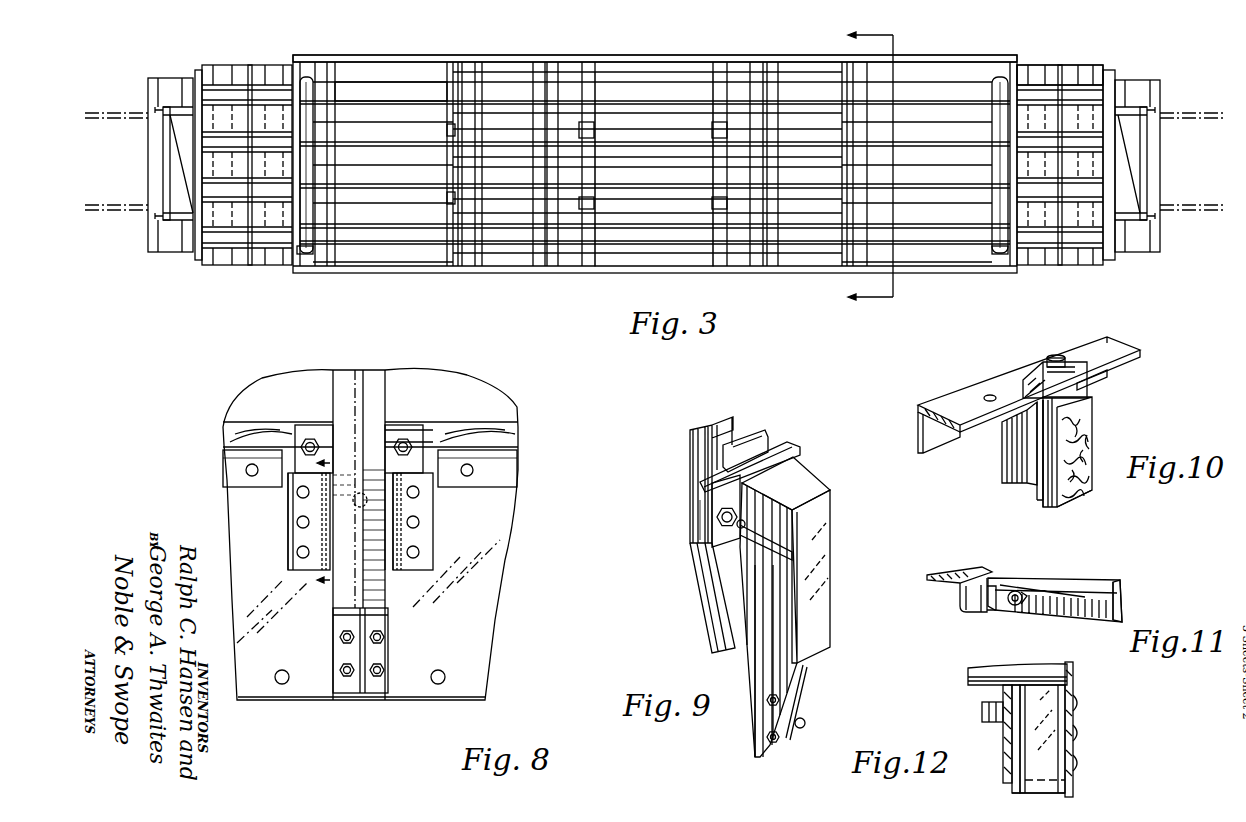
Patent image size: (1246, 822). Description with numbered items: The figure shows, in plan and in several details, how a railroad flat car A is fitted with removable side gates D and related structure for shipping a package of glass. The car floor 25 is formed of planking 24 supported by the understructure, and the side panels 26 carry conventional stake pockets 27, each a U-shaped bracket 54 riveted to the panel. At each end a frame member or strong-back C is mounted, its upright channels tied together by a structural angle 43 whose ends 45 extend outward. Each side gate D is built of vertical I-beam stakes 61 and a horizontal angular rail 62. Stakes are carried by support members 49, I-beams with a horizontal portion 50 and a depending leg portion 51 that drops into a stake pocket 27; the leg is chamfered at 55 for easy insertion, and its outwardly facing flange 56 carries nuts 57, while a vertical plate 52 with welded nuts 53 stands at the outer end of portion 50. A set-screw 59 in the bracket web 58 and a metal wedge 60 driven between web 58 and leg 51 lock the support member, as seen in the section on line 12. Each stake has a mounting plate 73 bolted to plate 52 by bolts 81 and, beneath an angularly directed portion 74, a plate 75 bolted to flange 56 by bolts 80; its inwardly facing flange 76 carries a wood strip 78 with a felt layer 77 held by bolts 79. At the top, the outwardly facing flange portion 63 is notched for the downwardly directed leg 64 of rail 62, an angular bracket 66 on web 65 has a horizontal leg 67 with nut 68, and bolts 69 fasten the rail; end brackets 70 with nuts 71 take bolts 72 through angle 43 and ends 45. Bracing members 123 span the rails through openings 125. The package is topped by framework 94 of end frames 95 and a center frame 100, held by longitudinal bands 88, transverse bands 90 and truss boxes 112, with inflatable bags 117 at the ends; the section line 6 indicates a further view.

In FIG. 3, the railroad flat car A is at (178, 82).
In FIG. 8, the railroad flat car A is at (243, 502).
In FIG. 3, the frame member C is at (248, 89).
In FIG. 3, the side gate D is at (394, 57).
In FIG. 3, the section line 6 is at (912, 43).
In FIG. 8, the section line 12 is at (353, 458).
In FIG. 8, the planking 24 is at (240, 439).
In FIG. 3, the floor 25 is at (1068, 78).
In FIG. 8, the floor 25 is at (505, 439).
In FIG. 8, the side panel 26 is at (492, 527).
In FIG. 12, the side panel 26 is at (1075, 748).
In FIG. 8, the stake pocket 27 is at (393, 505).
In FIG. 12, the stake pocket 27 is at (1003, 692).
In FIG. 3, the structural angle 43 is at (298, 245).
In FIG. 11, the structural angle 43 is at (950, 573).
In FIG. 11, the angle end 45 is at (970, 600).
In FIG. 9, the support member 49 is at (832, 537).
In FIG. 12, the support member 49 is at (990, 668).
In FIG. 9, the horizontal portion 50 is at (787, 488).
In FIG. 12, the horizontal portion 50 is at (978, 680).
In FIG. 9, the leg portion 51 is at (817, 612).
In FIG. 12, the leg portion 51 is at (1040, 702).
In FIG. 9, the vertical plate 52 is at (725, 495).
In FIG. 9, the nut 53 is at (722, 520).
In FIG. 8, the U-shaped bracket 54 is at (417, 533).
In FIG. 9, the chamfer 55 is at (807, 673).
In FIG. 9, the outwardly facing flange 56 is at (757, 747).
In FIG. 9, the nut 57 is at (797, 727).
In FIG. 8, the web 58 is at (328, 533).
In FIG. 12, the web 58 is at (1007, 747).
In FIG. 8, the set-screw 59 is at (340, 502).
In FIG. 12, the set-screw 59 is at (982, 712).
In FIG. 12, the metal wedge 60 is at (1012, 788).
In FIG. 8, the stake 61 is at (370, 398).
In FIG. 9, the stake 61 is at (704, 432).
In FIG. 10, the stake 61 is at (1024, 479).
In FIG. 3, the rail 62 is at (585, 58).
In FIG. 10, the rail 62 is at (943, 402).
In FIG. 11, the rail 62 is at (1073, 580).
In FIG. 10, the outwardly facing flange portion 63 is at (1010, 433).
In FIG. 10, the downwardly directed leg 64 is at (935, 434).
In FIG. 11, the downwardly directed leg 64 is at (1121, 603).
In FIG. 10, the web 65 is at (1028, 385).
In FIG. 10, the angular bracket 66 is at (1093, 408).
In FIG. 10, the horizontal leg 67 is at (1043, 358).
In FIG. 10, the nut 68 is at (1100, 383).
In FIG. 10, the bolt 69 is at (1058, 355).
In FIG. 11, the angular bracket 70 is at (1037, 609).
In FIG. 11, the nut 71 is at (1017, 607).
In FIG. 11, the bolt 72 is at (982, 607).
In FIG. 8, the mounting plate 73 is at (438, 438).
In FIG. 9, the mounting plate 73 is at (773, 450).
In FIG. 9, the angularly directed portion 74 is at (712, 597).
In FIG. 8, the plate 75 is at (388, 617).
In FIG. 9, the plate 75 is at (758, 685).
In FIG. 10, the inwardly facing flange 76 is at (1043, 492).
In FIG. 10, the felt layer 77 is at (1092, 487).
In FIG. 10, the wood strip 78 is at (1050, 498).
In FIG. 10, the bolt 79 is at (1090, 437).
In FIG. 8, the bolt 80 is at (340, 668).
In FIG. 9, the bolt 80 is at (755, 730).
In FIG. 8, the bolt 81 is at (310, 438).
In FIG. 9, the bolt 81 is at (698, 507).
In FIG. 3, the band 88 is at (373, 227).
In FIG. 3, the band 90 is at (590, 82).
In FIG. 3, the framework 94 is at (428, 89).
In FIG. 3, the end frame 95 is at (509, 87).
In FIG. 3, the center frame 100 is at (680, 78).
In FIG. 3, the truss box 112 is at (448, 200).
In FIG. 3, the inflatable rubber bag 117 is at (306, 75).
In FIG. 3, the bracing member 123 is at (475, 75).
In FIG. 10, the rail opening 125 is at (990, 394).